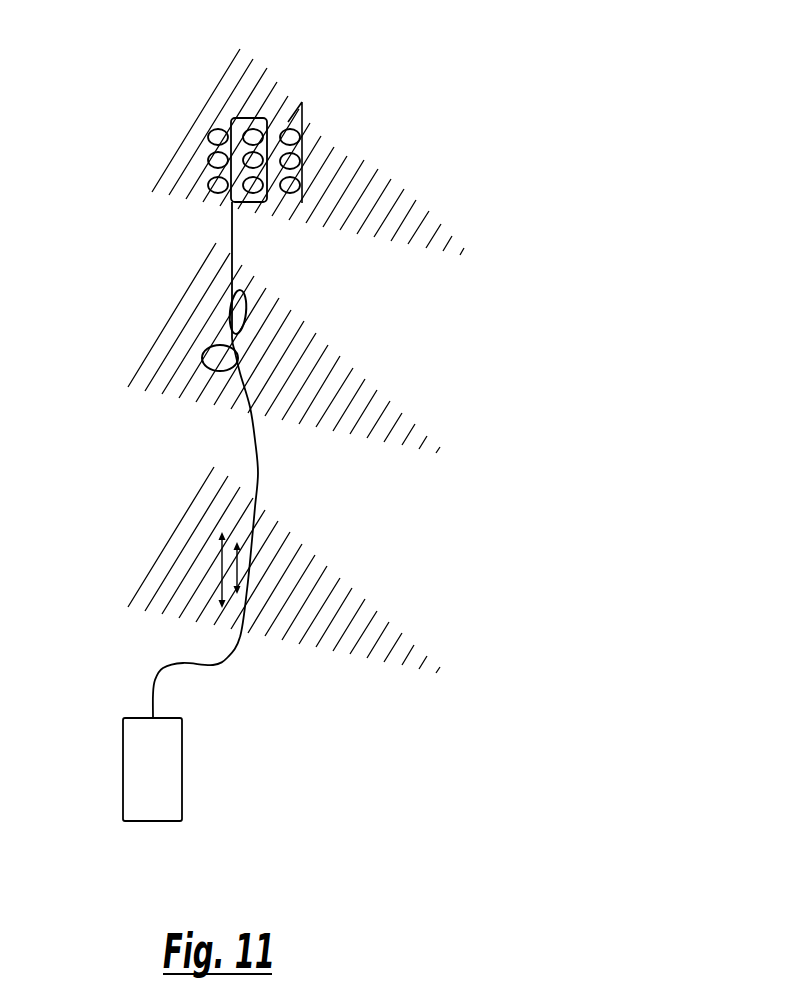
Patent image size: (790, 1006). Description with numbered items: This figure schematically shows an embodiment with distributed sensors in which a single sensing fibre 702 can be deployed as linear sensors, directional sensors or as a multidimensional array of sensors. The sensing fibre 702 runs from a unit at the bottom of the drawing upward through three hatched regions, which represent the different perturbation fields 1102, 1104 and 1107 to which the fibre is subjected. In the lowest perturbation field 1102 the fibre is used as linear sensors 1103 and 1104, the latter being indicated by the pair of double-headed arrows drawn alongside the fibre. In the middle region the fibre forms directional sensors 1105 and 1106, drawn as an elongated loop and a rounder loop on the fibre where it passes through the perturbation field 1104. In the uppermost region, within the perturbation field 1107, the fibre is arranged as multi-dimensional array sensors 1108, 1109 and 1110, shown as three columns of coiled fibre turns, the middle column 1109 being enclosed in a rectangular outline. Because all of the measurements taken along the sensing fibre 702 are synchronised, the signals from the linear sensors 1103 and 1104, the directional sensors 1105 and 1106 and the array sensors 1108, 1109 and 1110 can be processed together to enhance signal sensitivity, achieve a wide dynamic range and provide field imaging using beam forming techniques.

The sensing fibre 702 is at (152, 688).
The perturbation field 1102 is at (310, 583).
The linear sensor 1103 is at (252, 558).
The perturbation field / linear sensor 1104 is at (103, 541).
The directional sensor 1105 is at (250, 308).
The directional sensor 1106 is at (203, 357).
The perturbation field 1107 is at (331, 163).
The multi-dimensional array sensor 1108 is at (212, 133).
The multi-dimensional array sensor 1109 is at (268, 118).
The multi-dimensional array sensor 1110 is at (298, 185).